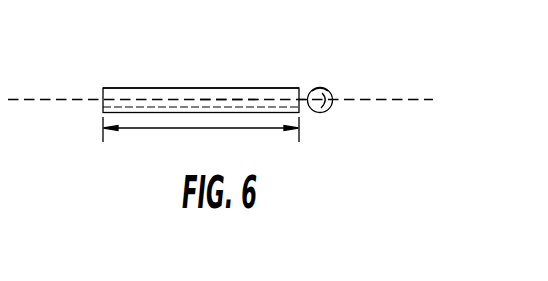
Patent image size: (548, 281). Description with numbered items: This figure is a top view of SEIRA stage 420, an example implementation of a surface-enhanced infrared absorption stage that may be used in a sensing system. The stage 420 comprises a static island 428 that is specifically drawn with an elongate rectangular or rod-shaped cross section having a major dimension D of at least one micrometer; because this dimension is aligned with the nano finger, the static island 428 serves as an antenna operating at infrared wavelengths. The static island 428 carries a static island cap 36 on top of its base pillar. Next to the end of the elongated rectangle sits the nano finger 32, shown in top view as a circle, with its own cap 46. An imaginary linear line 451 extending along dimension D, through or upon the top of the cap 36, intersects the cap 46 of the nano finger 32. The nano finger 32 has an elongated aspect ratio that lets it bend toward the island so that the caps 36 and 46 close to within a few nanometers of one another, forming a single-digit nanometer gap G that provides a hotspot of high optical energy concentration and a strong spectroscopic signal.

The SEIRA stage 420 is at (191, 37).
The static island 428 is at (165, 78).
The imaginary linear line 451 is at (65, 99).
The static island cap 36 is at (228, 99).
The nano finger 32 is at (340, 76).
The cap 46 is at (321, 87).
The gap G is at (304, 74).
The major dimension D is at (201, 140).